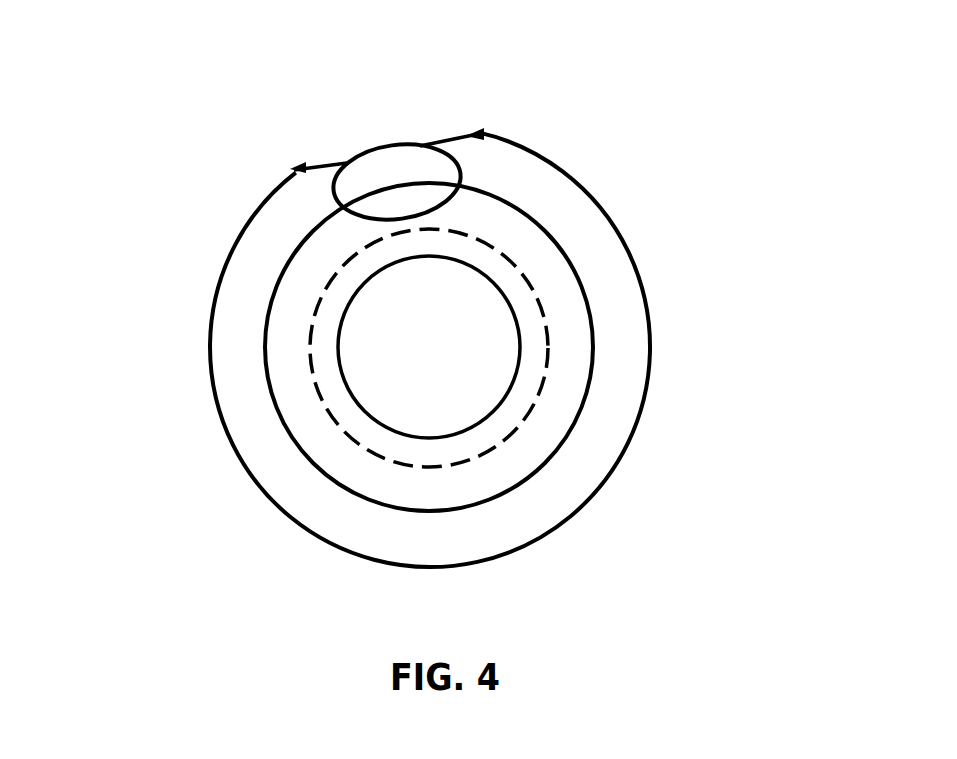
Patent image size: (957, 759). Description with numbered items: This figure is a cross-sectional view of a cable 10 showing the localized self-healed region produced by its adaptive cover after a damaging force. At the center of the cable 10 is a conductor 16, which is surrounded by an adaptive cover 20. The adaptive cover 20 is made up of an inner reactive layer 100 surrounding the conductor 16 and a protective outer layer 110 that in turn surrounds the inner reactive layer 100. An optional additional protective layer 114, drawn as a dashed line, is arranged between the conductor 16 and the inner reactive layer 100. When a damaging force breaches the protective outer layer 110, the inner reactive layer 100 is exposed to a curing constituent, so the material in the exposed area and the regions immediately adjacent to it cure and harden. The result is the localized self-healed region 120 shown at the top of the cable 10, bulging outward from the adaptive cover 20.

The cable 10 is at (205, 128).
The conductor 16 is at (452, 342).
The adaptive cover 20 is at (763, 130).
The inner reactive layer 100 is at (533, 272).
The protective outer layer 110 is at (548, 217).
The additional protective layer 114 is at (508, 412).
The localized self-healed region 120 is at (390, 145).